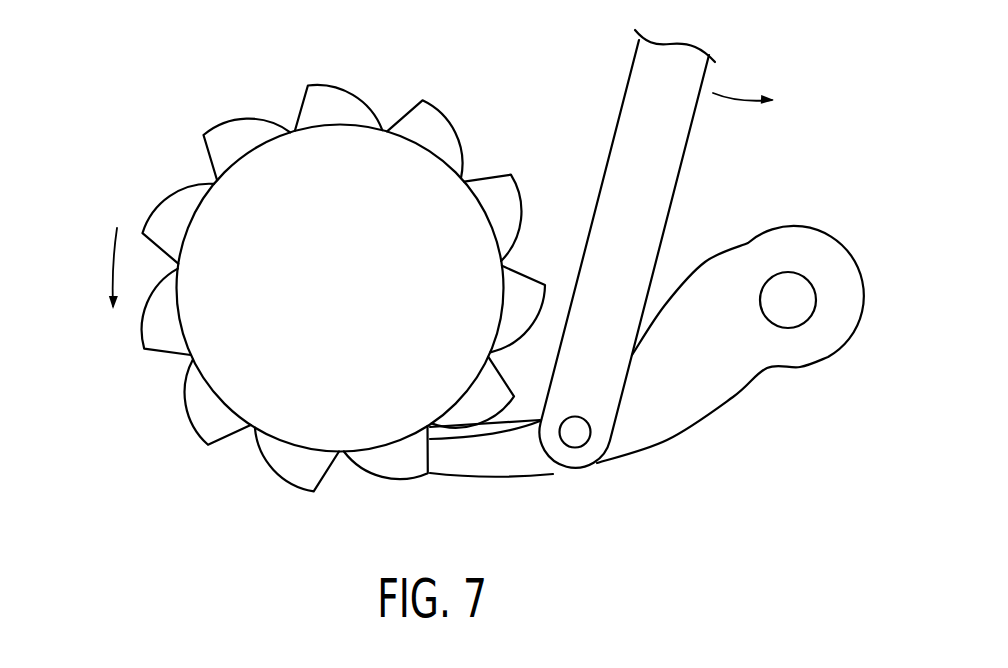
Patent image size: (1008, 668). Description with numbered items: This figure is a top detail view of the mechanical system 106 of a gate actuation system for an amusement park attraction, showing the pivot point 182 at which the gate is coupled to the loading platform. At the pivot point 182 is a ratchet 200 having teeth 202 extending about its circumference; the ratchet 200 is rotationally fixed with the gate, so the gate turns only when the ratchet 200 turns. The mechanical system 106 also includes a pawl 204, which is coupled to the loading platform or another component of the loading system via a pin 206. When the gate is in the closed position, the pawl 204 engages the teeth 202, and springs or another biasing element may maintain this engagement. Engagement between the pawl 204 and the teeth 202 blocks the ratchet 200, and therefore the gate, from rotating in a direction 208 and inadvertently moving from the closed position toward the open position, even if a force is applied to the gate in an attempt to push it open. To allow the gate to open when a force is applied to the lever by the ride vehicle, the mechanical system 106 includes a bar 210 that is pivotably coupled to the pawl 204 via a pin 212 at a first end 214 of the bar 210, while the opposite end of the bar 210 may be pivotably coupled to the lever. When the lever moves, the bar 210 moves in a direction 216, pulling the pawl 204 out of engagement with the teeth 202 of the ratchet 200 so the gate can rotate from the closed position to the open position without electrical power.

The mechanical system 106 is at (324, 260).
The pivot point 182 is at (343, 260).
The ratchet 200 is at (321, 294).
The teeth 202 is at (500, 200).
The pawl 204 is at (730, 345).
The pin 206 is at (788, 300).
The direction 208 is at (110, 268).
The bar 210 is at (647, 287).
The pin 212 is at (573, 436).
The first end 214 is at (622, 497).
The direction 216 is at (730, 95).